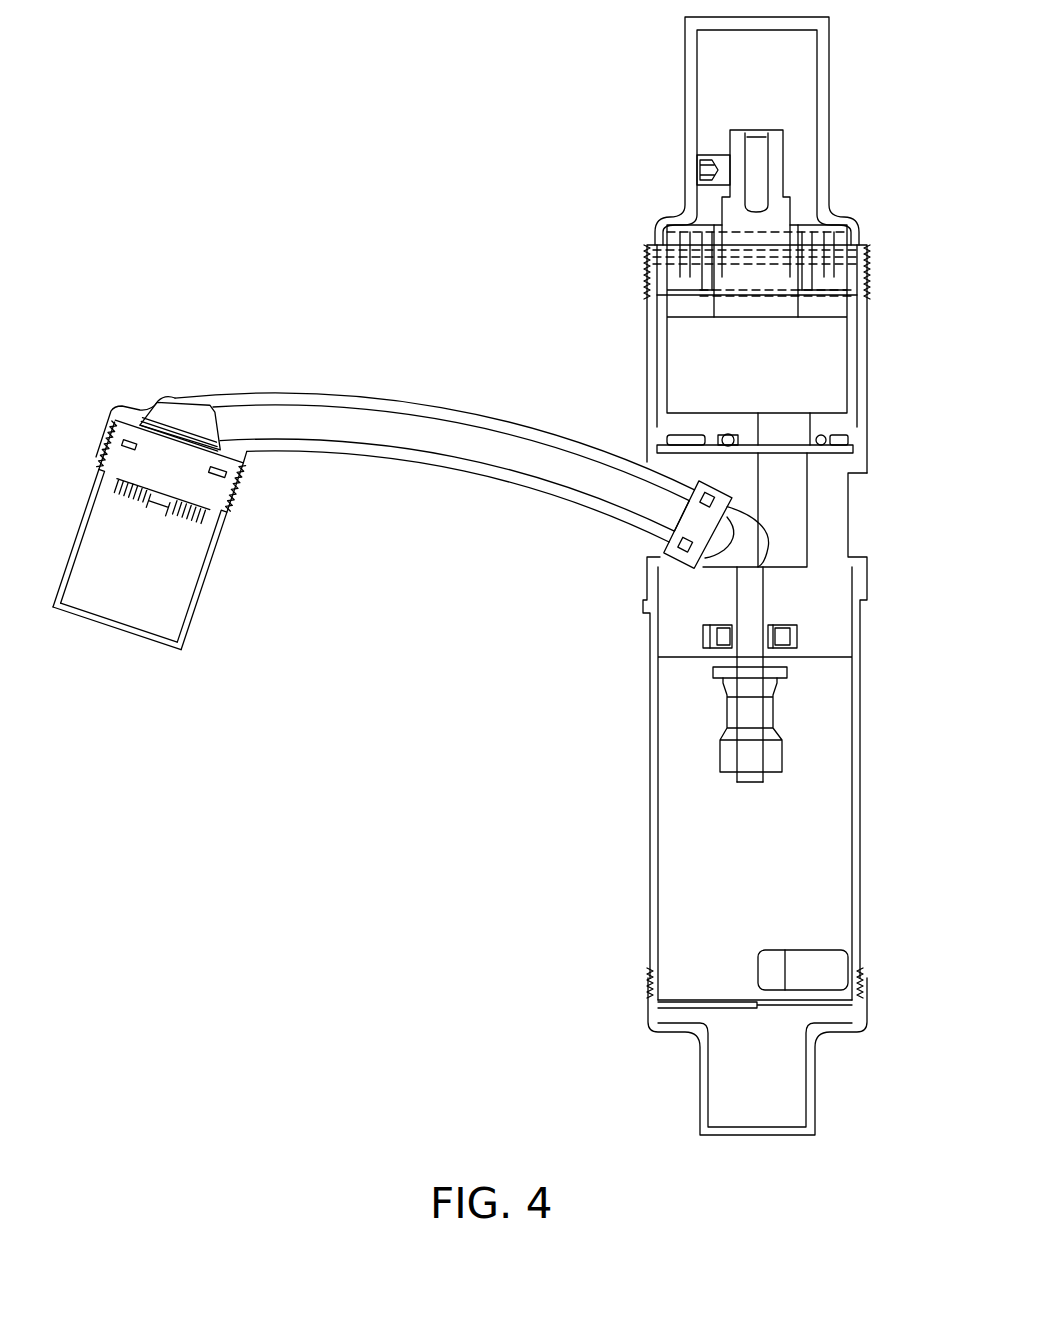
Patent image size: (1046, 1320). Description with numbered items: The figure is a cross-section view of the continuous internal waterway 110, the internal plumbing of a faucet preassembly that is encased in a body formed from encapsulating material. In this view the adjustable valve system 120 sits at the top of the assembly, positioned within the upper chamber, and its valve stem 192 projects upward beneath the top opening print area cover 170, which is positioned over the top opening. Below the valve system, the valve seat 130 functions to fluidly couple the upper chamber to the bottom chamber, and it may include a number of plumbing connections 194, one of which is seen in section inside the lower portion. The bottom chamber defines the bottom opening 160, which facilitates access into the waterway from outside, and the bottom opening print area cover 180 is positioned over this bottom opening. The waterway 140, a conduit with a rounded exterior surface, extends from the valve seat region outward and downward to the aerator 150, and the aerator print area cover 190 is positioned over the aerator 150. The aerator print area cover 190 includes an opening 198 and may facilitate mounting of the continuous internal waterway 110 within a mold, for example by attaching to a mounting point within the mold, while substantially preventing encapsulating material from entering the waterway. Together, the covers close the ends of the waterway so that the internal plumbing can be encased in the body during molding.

The continuous internal waterway 110 is at (318, 268).
The adjustable valve system 120 is at (862, 357).
The valve seat 130 is at (850, 505).
The waterway 140 is at (379, 396).
The aerator 150 is at (228, 478).
The bottom opening 160 is at (720, 1022).
The top opening print area cover 170 is at (685, 82).
The bottom opening print area cover 180 is at (698, 1090).
The aerator print area cover 190 is at (203, 598).
The valve stem 192 is at (787, 163).
The plumbing connections 194 is at (712, 752).
The opening 198 is at (98, 620).